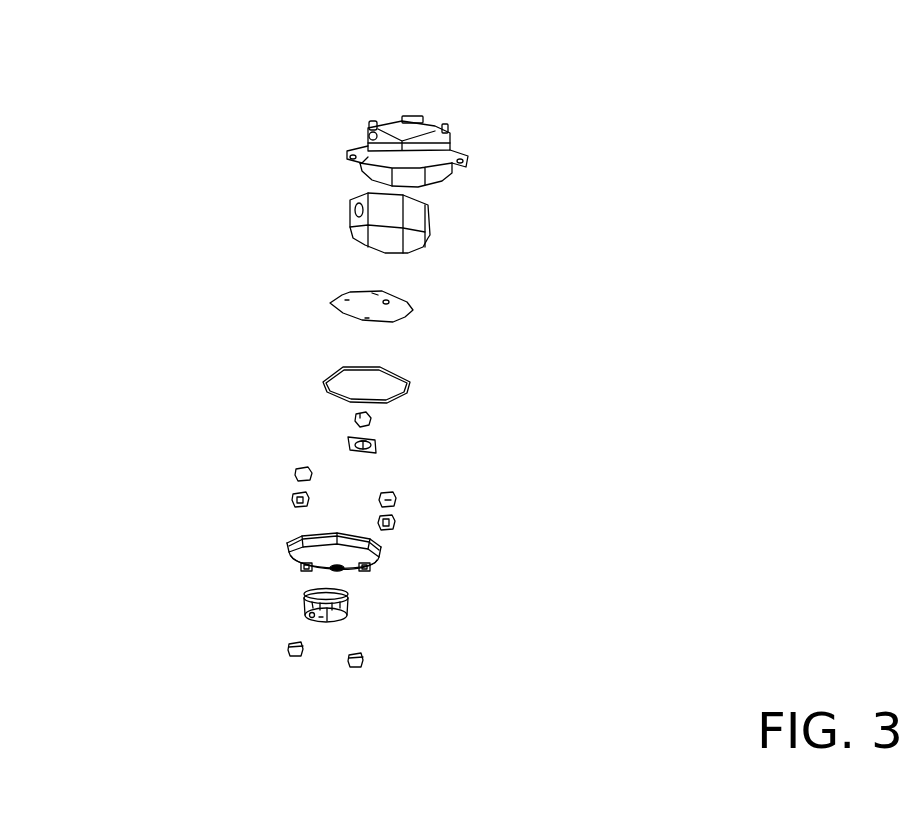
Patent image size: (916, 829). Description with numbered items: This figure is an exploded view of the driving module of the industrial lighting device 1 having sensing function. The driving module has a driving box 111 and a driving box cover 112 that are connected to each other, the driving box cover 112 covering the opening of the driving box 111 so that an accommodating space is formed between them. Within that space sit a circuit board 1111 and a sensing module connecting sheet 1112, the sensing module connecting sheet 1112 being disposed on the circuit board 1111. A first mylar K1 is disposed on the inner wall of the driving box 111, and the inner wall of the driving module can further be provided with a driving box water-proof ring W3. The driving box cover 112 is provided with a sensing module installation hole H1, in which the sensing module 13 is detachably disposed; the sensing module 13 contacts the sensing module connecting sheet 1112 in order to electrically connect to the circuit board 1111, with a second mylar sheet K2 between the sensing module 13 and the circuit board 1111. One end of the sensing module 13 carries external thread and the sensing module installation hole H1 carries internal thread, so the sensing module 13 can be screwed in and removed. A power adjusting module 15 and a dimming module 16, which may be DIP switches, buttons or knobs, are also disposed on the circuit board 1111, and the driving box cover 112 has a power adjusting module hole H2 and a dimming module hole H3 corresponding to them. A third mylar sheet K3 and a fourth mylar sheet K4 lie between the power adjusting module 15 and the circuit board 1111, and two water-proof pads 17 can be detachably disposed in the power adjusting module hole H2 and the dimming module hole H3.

The industrial lighting device 1 is at (147, 168).
The driving box 111 is at (440, 138).
The first mylar K1 is at (420, 220).
The circuit board 1111 is at (413, 310).
The driving box water-proof ring W3 is at (323, 376).
The second mylar sheet K2 is at (353, 413).
The sensing module connecting sheet 1112 is at (376, 447).
The third mylar sheet K3 is at (292, 475).
The power adjusting module 15 is at (292, 505).
The fourth mylar sheet K4 is at (397, 499).
The dimming module 16 is at (395, 521).
The driving box cover 112 is at (382, 563).
The sensing module installation hole H1 is at (320, 583).
The power adjusting module hole H2 is at (286, 566).
The dimming module hole H3 is at (380, 569).
The sensing module 13 is at (348, 607).
The water-proof pads 17 is at (289, 653).